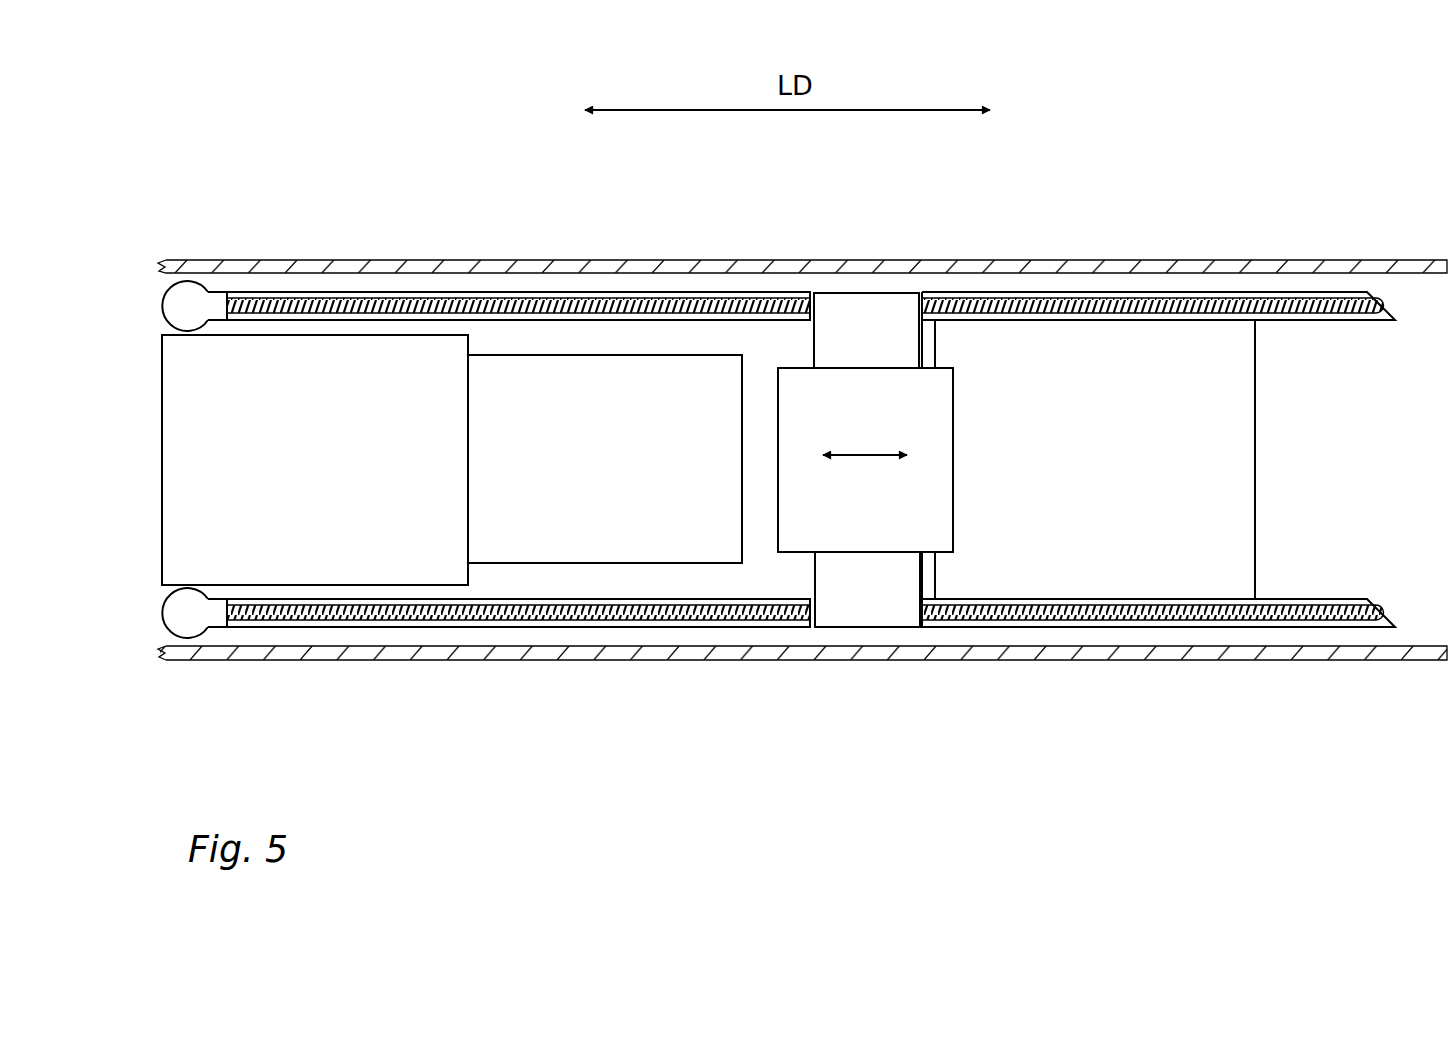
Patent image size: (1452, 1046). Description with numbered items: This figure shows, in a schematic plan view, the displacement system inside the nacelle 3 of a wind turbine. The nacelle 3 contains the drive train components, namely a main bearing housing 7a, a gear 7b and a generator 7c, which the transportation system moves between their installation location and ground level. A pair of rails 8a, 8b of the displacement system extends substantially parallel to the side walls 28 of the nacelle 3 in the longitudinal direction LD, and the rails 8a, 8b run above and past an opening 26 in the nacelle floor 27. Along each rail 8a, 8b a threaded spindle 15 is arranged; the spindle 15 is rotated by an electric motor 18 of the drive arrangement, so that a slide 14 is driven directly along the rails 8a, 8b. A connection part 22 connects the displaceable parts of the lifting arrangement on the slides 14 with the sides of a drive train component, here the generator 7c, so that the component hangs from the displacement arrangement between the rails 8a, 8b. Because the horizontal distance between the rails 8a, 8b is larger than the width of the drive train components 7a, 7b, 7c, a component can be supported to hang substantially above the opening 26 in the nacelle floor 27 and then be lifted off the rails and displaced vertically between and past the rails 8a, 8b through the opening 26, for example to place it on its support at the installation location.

The nacelle 3 is at (1155, 120).
The main bearing housing 7a is at (272, 508).
The gear 7b is at (575, 508).
The generator 7c is at (883, 508).
The rail 8a is at (1115, 622).
The rail 8b is at (1242, 297).
The slide 14 is at (883, 293).
The threaded spindle 15 is at (1342, 300).
The electric motor 18 is at (190, 297).
The connection part 22 is at (850, 303).
The opening 26 is at (1083, 479).
The nacelle floor 27 is at (1298, 478).
The side wall 28 is at (1063, 266).